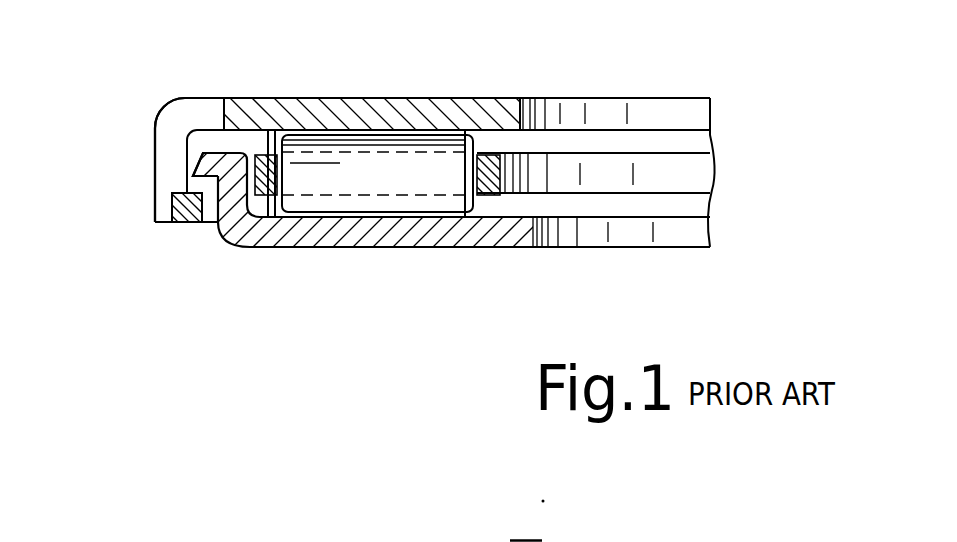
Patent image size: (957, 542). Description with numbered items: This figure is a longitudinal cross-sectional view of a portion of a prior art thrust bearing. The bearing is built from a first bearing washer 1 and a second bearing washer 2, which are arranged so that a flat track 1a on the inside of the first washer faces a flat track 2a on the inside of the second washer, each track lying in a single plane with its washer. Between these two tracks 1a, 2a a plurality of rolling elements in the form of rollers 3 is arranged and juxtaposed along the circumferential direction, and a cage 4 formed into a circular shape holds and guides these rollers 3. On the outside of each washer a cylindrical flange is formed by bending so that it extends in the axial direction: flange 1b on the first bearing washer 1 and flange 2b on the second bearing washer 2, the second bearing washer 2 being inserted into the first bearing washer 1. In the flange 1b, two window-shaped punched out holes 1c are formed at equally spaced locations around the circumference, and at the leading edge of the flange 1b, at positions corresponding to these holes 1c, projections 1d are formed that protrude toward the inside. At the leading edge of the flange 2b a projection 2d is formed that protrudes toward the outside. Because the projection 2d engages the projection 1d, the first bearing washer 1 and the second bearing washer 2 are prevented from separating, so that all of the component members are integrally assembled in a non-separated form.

The first bearing washer 1 is at (506, 96).
The track 1a is at (408, 128).
The flange 1b is at (152, 170).
The punched out hole 1c is at (168, 152).
The projection 1d is at (190, 223).
The second bearing washer 2 is at (504, 251).
The track 2a is at (393, 226).
The flange 2b is at (203, 203).
The projection 2d is at (203, 172).
The roller 3 is at (373, 150).
The cage 4 is at (267, 154).